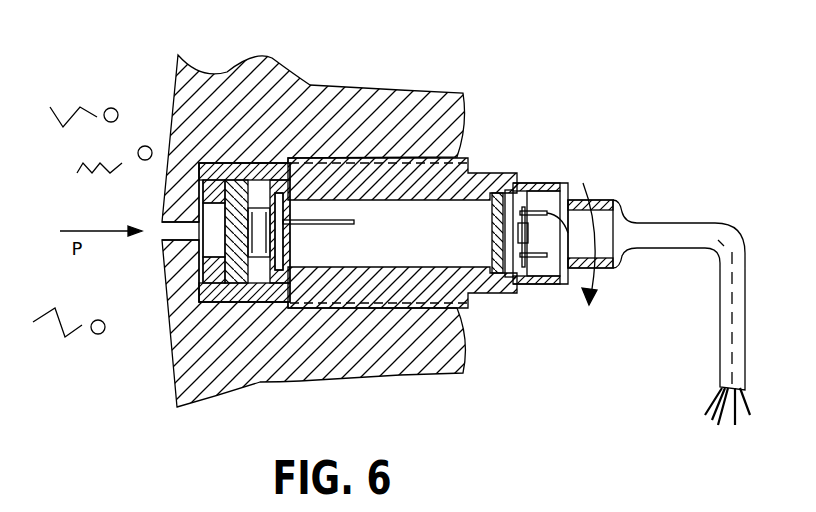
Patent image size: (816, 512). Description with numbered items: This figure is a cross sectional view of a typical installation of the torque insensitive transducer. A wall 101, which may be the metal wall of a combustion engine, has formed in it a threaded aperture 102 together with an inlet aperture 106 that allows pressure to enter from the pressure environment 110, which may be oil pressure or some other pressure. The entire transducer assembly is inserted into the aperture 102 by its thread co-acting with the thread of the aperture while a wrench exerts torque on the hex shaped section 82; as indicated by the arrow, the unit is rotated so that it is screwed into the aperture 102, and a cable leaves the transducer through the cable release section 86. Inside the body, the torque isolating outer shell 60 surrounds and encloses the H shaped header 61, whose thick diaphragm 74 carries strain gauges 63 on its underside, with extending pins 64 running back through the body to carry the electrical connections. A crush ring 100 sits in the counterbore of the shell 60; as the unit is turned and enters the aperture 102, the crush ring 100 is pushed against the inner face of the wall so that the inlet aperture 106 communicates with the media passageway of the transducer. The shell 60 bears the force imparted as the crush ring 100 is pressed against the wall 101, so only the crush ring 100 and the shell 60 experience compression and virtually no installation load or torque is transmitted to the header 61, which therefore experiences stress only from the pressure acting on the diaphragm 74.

The torque isolating outer shell 60 is at (247, 192).
The H shaped header 61 is at (255, 260).
The strain gauges 63 is at (238, 270).
The extending pins 64 is at (215, 245).
The thick diaphragm 74 is at (272, 178).
The hex shaped section 82 is at (580, 268).
The cable release section 86 is at (238, 222).
The crush ring 100 is at (200, 215).
The wall 101 is at (438, 117).
The threaded aperture 102 is at (423, 157).
The inlet aperture 106 is at (165, 232).
The pressure environment 110 is at (83, 107).